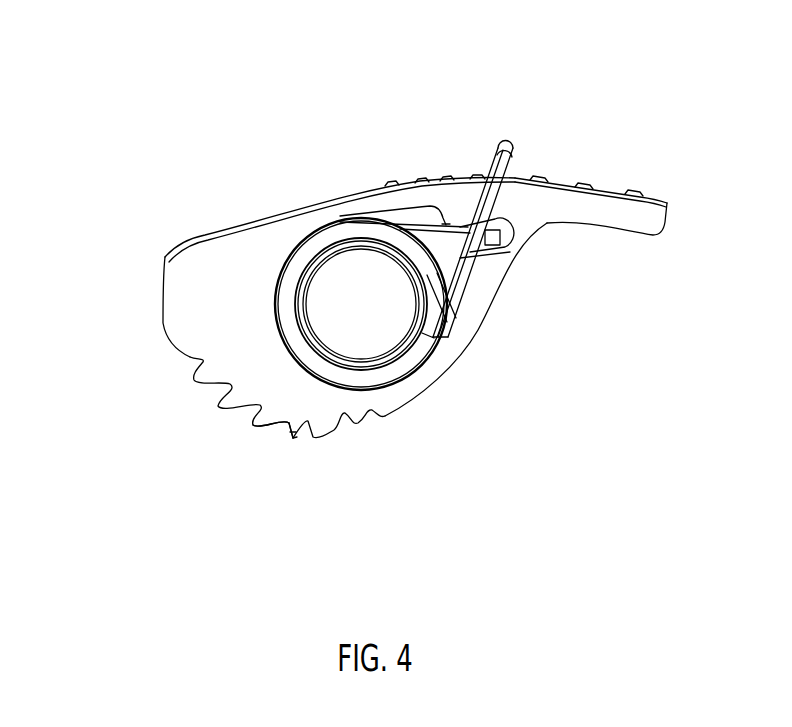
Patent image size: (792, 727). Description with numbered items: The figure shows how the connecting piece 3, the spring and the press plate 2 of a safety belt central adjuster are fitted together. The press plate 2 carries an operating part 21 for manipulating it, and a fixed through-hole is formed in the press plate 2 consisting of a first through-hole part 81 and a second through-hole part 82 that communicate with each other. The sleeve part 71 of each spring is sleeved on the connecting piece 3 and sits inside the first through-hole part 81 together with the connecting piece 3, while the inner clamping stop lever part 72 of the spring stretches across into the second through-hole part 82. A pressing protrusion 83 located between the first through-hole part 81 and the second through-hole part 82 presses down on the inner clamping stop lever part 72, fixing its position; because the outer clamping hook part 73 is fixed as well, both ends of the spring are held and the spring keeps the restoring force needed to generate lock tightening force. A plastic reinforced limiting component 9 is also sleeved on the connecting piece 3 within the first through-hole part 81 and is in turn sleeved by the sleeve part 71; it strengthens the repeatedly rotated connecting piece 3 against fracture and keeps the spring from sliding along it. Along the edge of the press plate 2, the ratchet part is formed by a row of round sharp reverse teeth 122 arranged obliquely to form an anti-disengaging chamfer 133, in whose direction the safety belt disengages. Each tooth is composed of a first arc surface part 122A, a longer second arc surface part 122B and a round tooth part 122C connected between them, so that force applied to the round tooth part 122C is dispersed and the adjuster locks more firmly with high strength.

The press plate 2 is at (235, 224).
The operating part 21 is at (563, 188).
The first through-hole part 81 is at (393, 213).
The pressing protrusion 83 is at (446, 223).
The inner clamping stop lever part 72 is at (490, 237).
The outer clamping hook part 73 is at (508, 140).
The second through-hole part 82 is at (493, 253).
The sleeve part 71 is at (367, 377).
The connecting piece 3 is at (415, 350).
The reinforced limiting component 9 is at (356, 304).
The round sharp reverse teeth 122 is at (284, 450).
The first arc surface part 122A is at (297, 437).
The second arc surface part 122B is at (287, 426).
The round tooth part 122C is at (288, 430).
The anti-disengaging chamfer 133 is at (293, 438).